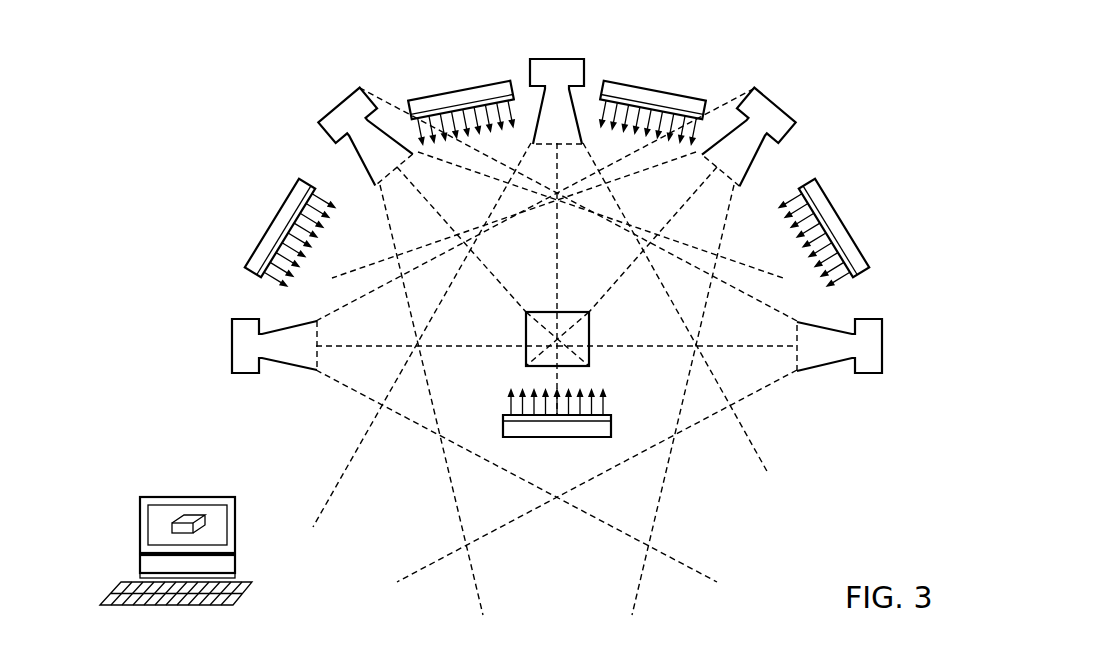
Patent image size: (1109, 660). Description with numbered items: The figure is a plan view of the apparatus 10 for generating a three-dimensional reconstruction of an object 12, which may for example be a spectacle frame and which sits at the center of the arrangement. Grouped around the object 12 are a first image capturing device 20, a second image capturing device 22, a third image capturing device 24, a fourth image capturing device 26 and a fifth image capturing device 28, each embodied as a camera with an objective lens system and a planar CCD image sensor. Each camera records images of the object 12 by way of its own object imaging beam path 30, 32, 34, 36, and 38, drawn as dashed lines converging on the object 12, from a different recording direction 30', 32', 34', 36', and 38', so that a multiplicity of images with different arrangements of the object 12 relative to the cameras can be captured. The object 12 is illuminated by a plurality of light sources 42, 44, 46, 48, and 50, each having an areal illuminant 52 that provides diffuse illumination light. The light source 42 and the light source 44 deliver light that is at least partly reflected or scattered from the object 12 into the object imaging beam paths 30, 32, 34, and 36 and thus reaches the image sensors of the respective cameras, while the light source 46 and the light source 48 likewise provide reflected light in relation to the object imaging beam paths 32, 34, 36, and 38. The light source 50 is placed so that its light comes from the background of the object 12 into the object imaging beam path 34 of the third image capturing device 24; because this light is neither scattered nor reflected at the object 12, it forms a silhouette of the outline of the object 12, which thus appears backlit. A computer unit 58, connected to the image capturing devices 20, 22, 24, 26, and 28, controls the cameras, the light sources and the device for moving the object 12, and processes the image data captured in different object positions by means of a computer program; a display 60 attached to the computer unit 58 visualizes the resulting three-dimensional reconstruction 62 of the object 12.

The apparatus 10 is at (206, 56).
The object 12 is at (590, 328).
The first image capturing device 20 is at (243, 373).
The second image capturing device 22 is at (337, 106).
The third image capturing device 24 is at (557, 59).
The fourth image capturing device 26 is at (777, 106).
The fifth image capturing device 28 is at (868, 375).
The object imaging beam path 30 is at (535, 335).
The recording direction 30' is at (424, 385).
The object imaging beam path 32 is at (515, 372).
The recording direction 32' is at (443, 180).
The object imaging beam path 34 is at (540, 274).
The recording direction 34' is at (525, 217).
The object imaging beam path 36 is at (597, 372).
The recording direction 36' is at (668, 180).
The object imaging beam path 38 is at (578, 335).
The recording direction 38' is at (688, 385).
The light source 42 is at (271, 222).
The light source 44 is at (453, 90).
The light source 46 is at (657, 90).
The light source 48 is at (843, 222).
The light source 50 is at (612, 422).
The areal illuminant 52 is at (507, 416).
The computer unit 58 is at (237, 562).
The display 60 is at (178, 495).
The 3D reconstruction 62 is at (203, 522).